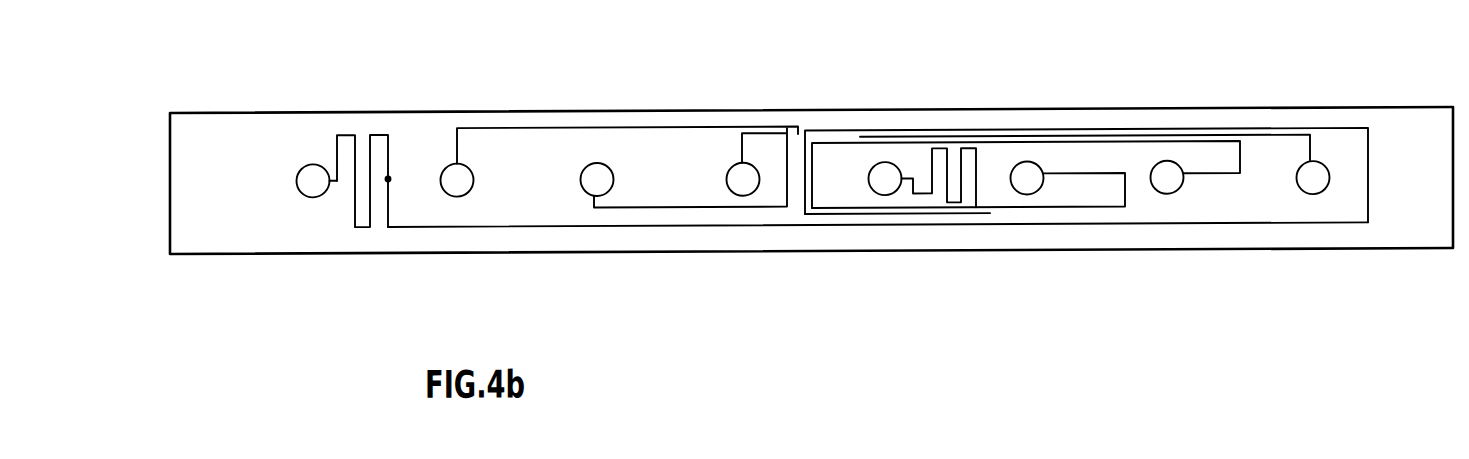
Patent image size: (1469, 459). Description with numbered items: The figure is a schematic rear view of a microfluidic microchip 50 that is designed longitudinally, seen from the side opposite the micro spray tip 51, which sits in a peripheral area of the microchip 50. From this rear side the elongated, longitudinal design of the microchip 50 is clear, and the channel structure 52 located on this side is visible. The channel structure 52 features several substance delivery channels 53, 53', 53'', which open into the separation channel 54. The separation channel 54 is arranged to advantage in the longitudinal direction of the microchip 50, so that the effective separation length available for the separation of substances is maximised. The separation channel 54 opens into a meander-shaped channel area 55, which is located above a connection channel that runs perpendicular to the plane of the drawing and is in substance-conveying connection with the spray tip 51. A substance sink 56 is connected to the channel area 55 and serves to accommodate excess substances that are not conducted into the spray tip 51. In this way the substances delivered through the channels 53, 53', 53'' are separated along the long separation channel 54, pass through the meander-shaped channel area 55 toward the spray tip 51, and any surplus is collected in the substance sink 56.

The microfluidic microchip 50 is at (1406, 237).
The micro spray tip 51 is at (397, 160).
The channel structure 52 is at (847, 205).
The substance delivery channel 53 is at (1170, 113).
The substance delivery channel 53' is at (923, 126).
The substance delivery channel 53'' is at (620, 119).
The separation channel 54 is at (480, 229).
The meander-shaped channel area 55 is at (378, 201).
The substance sink 56 is at (305, 186).